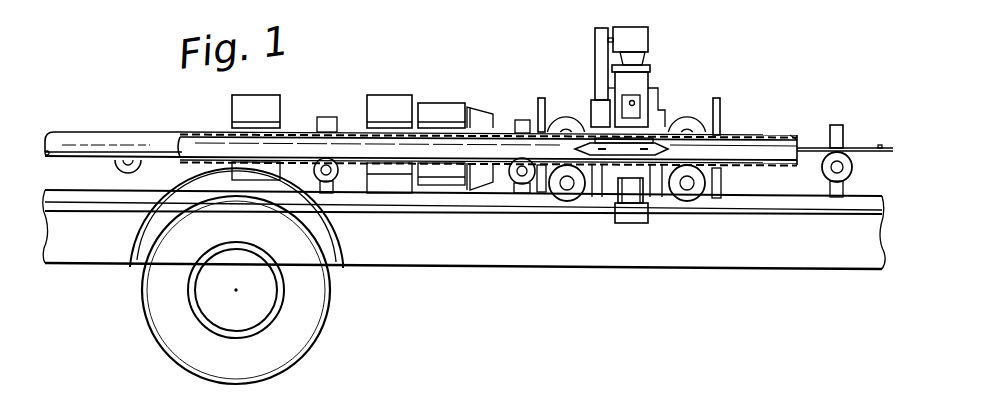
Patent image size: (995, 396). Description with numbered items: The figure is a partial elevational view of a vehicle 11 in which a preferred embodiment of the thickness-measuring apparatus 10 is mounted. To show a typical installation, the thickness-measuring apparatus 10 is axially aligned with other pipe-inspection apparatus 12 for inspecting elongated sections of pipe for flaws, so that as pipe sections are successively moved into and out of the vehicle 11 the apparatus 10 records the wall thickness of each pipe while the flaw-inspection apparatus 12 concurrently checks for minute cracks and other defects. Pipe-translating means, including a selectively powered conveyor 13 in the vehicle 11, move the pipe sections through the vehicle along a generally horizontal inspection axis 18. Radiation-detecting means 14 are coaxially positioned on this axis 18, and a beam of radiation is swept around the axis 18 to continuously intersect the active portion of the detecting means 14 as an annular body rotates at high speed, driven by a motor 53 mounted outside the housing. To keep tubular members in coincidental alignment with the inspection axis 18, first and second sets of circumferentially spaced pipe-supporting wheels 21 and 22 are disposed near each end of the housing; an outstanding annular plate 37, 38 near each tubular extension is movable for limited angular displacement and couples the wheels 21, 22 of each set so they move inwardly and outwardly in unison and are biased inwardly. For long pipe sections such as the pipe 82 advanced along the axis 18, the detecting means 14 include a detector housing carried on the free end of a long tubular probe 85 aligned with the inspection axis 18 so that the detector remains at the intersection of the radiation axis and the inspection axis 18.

The thickness-measuring apparatus 10 is at (660, 78).
The vehicle 11 is at (450, 252).
The pipe-inspection apparatus 12 is at (400, 82).
The conveyor 13 is at (850, 125).
The radiation-detecting means 14 is at (617, 195).
The longitudinal axis 18 is at (493, 148).
The pipe-supporting wheels 21 is at (697, 203).
The pipe-supporting wheels 22 is at (563, 205).
The annular plate 37 is at (720, 102).
The annular plate 38 is at (546, 130).
The motor 53 is at (650, 37).
The pipe section 82 is at (765, 134).
The tubular probe 85 is at (868, 153).